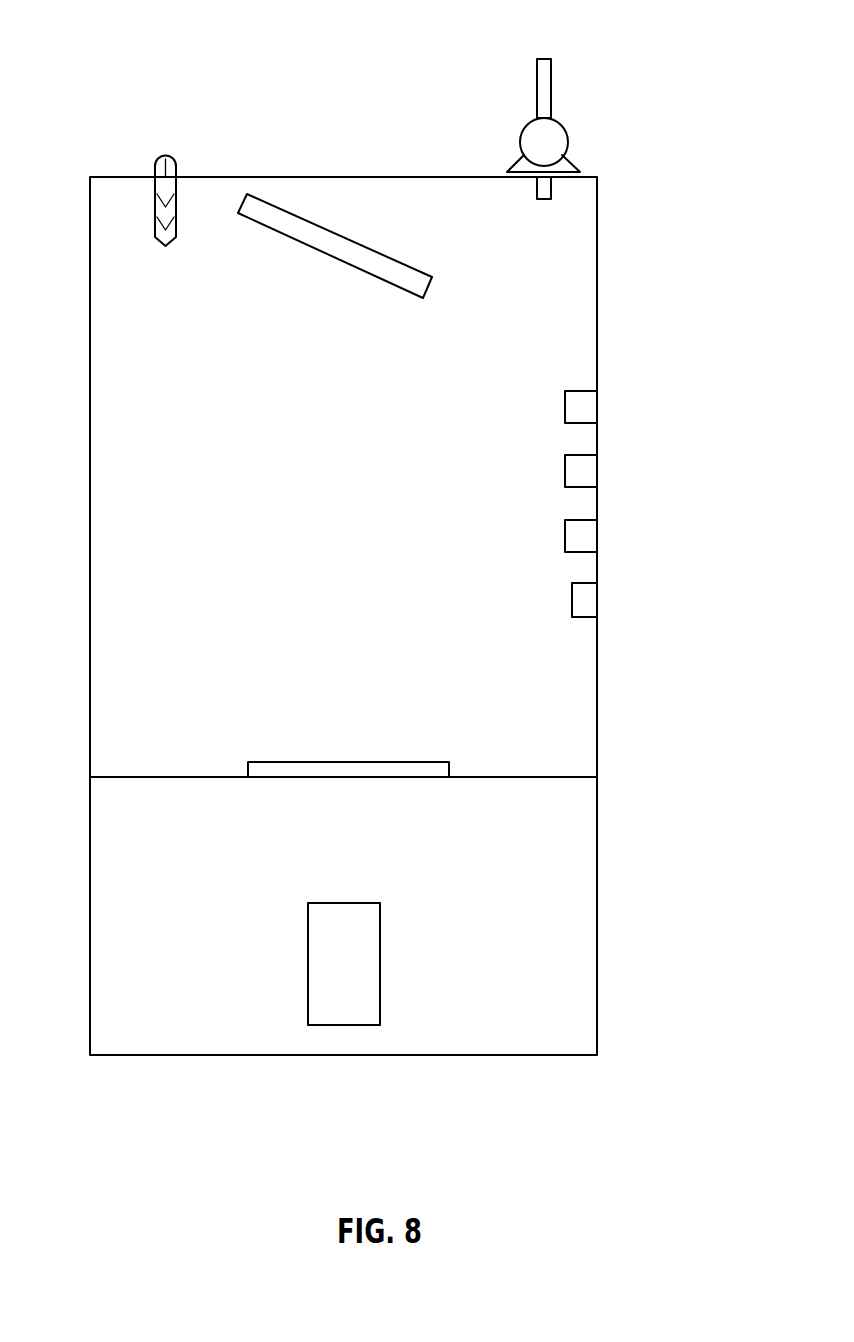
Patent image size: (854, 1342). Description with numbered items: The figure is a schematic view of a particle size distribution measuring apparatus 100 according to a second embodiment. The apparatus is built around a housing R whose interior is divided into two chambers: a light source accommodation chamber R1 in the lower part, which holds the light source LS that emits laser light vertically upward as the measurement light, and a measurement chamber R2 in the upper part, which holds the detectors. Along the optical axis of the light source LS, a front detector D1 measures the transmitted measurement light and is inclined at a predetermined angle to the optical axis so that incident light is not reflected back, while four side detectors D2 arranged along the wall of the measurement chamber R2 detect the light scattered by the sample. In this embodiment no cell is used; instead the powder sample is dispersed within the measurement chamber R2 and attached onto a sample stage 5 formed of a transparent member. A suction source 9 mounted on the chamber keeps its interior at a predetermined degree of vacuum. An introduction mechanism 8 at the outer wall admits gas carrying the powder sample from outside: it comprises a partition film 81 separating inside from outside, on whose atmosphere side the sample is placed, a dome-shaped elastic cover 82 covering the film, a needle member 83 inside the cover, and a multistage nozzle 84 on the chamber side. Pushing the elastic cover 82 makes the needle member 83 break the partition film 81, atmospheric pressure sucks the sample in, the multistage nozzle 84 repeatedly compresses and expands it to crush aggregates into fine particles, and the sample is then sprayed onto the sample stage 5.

The particle size distribution measuring apparatus 100 is at (705, 63).
The housing R is at (118, 177).
The light source accommodation chamber R1 is at (163, 1017).
The measurement chamber R2 is at (484, 194).
The introduction mechanism 8 is at (199, 167).
The partition film 81 is at (178, 184).
The elastic cover 82 is at (177, 170).
The needle member 83 is at (175, 157).
The multistage nozzle 84 is at (178, 202).
The suction source 9 is at (568, 140).
The front detector D1 is at (383, 252).
The side detectors D2 is at (565, 405).
The sample stage 5 is at (260, 761).
The light source LS is at (380, 963).